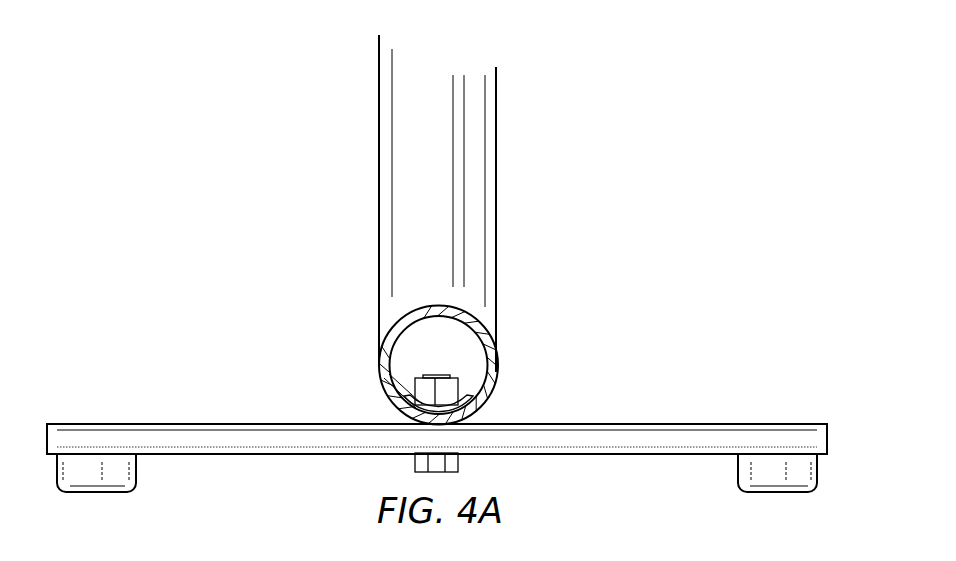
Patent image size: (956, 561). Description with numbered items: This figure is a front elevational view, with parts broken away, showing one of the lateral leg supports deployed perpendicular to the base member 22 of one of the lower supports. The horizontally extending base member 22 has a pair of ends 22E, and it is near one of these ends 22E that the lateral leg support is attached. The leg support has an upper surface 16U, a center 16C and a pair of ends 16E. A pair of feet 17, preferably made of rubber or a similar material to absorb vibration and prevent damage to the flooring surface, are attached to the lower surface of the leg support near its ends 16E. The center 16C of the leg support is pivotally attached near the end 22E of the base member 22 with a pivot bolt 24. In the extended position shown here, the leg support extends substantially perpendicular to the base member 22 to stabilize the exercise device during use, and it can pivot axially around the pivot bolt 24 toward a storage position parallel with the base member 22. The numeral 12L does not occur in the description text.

The lower arm section 12L is at (280, 455).
The upper surface 16U is at (333, 423).
The center 16C is at (485, 455).
The ends 16E is at (45, 440).
The feet 17 is at (116, 493).
The base member 22 is at (492, 388).
The ends 22E is at (482, 333).
The pivot bolt 24 is at (415, 465).